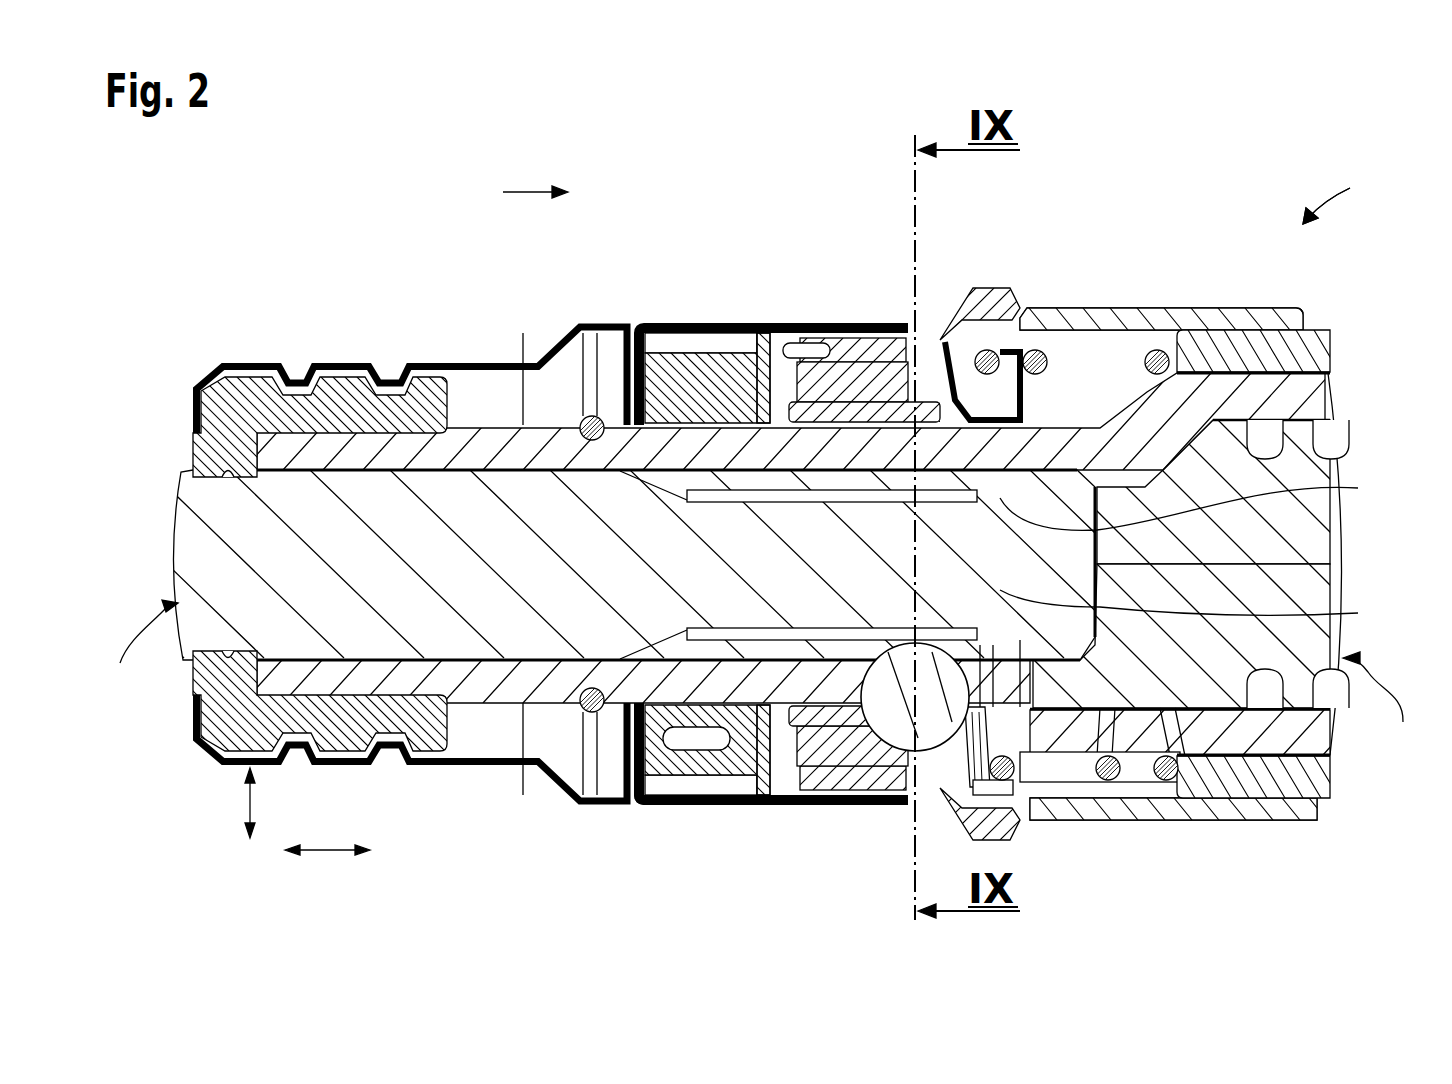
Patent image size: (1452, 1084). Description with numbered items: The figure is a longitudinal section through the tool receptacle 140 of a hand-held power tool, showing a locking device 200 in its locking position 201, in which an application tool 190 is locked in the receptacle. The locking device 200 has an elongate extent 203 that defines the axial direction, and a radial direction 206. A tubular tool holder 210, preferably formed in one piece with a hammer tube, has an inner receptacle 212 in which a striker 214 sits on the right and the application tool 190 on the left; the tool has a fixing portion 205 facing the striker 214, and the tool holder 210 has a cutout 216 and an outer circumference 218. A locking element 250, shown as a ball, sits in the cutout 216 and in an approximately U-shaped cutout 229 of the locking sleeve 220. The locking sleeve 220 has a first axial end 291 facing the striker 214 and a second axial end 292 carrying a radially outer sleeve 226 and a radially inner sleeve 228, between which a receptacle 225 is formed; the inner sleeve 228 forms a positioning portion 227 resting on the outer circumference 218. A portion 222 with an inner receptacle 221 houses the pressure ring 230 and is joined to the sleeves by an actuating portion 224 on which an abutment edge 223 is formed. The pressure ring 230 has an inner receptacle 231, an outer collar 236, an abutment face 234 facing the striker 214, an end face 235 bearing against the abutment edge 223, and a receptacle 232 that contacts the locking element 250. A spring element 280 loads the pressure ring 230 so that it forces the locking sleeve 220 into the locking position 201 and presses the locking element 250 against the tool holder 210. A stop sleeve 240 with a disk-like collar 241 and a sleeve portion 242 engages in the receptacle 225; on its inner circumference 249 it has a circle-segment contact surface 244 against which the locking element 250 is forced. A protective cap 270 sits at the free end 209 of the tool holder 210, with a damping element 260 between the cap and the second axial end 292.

The tool receptacle 140 is at (880, 170).
The application tool 190 is at (215, 528).
The locking device 200 is at (1377, 185).
The locking position 201 is at (1377, 185).
The elongate extent 203 is at (330, 855).
The fixing portion 205 is at (697, 752).
The radial direction 206 is at (248, 805).
The free end 209 is at (131, 644).
The tool holder 210 is at (1278, 398).
The inner receptacle 212 is at (1298, 442).
The striker 214 is at (1305, 543).
The cutout 216 is at (1280, 656).
The outer circumference 218 is at (857, 380).
The locking sleeve 220 is at (1140, 270).
The inner receptacle 221 is at (1082, 340).
The portion 222 is at (1238, 822).
The abutment edge 223 is at (935, 355).
The actuating portion 224 is at (985, 296).
The receptacle 225 is at (765, 410).
The radially outer sleeve 226 is at (882, 345).
The positioning portion 227 is at (735, 460).
The radially inner sleeve 228 is at (812, 398).
The cutout 229 is at (765, 768).
The pressure ring 230 is at (1000, 782).
The inner receptacle 231 is at (1358, 488).
The receptacle 232 is at (1358, 613).
The abutment face 234 is at (1012, 800).
The end face 235 is at (945, 800).
The outer collar 236 is at (1040, 800).
The stop sleeve 240 is at (730, 812).
The disk-like collar 241 is at (773, 816).
The sleeve portion 242 is at (817, 343).
The contact surface 244 is at (882, 728).
The inner circumference 249 is at (850, 790).
The locking element 250 is at (890, 740).
The damping element 260 is at (675, 385).
The protective cap 270 is at (343, 270).
The spring element 280 is at (1158, 350).
The first axial end 291 is at (1394, 697).
The second axial end 292 is at (522, 192).